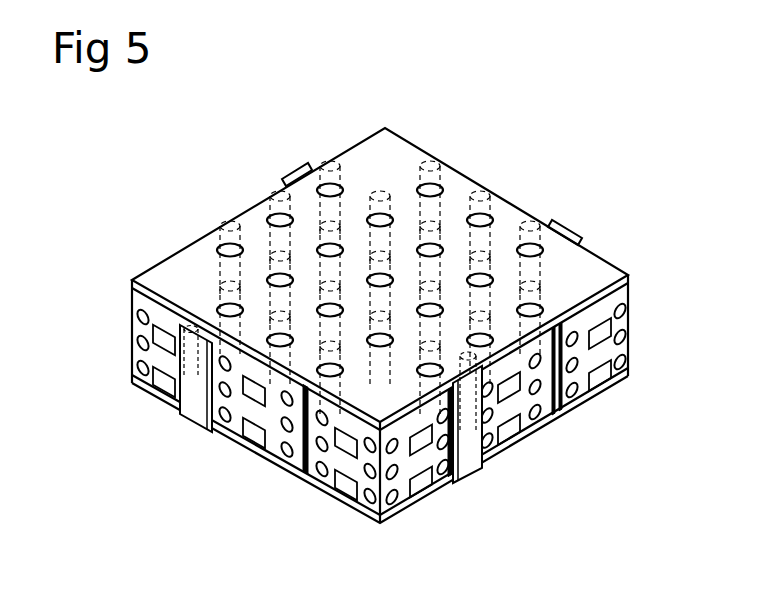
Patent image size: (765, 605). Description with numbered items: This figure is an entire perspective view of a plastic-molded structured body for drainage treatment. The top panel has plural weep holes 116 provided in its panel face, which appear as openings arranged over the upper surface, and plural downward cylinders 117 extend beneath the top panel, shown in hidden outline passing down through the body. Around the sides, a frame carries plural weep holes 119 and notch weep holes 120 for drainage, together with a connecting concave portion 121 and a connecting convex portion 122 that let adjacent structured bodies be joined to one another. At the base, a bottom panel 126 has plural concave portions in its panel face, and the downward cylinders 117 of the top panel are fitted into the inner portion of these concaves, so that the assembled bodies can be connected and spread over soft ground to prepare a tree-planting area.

The weep holes 116 is at (228, 248).
The downward cylinders 117 is at (385, 185).
The weep holes 119 is at (138, 312).
The notch weep holes 120 is at (160, 400).
The connecting concave portion 121 is at (304, 485).
The connecting convex portion 122 is at (293, 173).
The bottom panel 126 is at (262, 448).